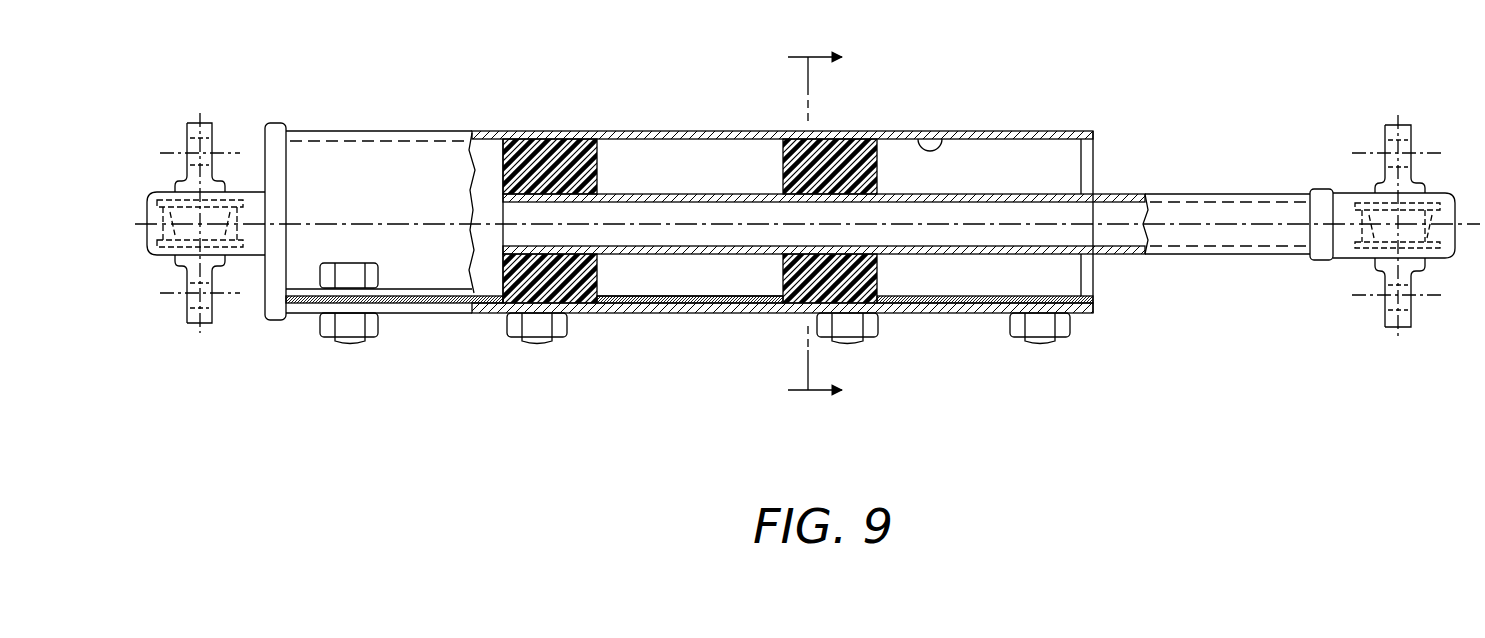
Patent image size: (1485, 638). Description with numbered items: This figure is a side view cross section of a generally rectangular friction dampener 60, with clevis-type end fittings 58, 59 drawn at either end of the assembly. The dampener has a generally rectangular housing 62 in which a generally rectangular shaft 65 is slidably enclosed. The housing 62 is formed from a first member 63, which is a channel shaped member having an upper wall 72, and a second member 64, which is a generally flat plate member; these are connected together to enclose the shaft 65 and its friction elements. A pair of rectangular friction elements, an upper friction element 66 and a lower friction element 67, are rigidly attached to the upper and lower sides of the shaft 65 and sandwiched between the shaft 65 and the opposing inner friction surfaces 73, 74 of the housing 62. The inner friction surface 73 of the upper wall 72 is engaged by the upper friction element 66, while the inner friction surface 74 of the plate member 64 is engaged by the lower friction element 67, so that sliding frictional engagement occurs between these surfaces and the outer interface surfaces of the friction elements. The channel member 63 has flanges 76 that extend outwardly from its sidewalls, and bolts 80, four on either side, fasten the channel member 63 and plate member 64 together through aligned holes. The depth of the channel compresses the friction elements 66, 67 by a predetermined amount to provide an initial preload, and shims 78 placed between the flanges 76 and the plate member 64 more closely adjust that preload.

The clevis end fitting 58 is at (148, 192).
The clevis end fitting 59 is at (1453, 210).
The friction dampener 60 is at (787, 223).
The rectangular housing 62 is at (614, 128).
The first member 63 is at (707, 130).
The second member 64 is at (668, 316).
The rectangular shaft 65 is at (962, 193).
The upper friction element 66 is at (595, 170).
The lower friction element 67 is at (594, 274).
The upper wall 72 is at (1047, 130).
The inner friction surface 73 is at (936, 147).
The inner friction surface 74 is at (698, 306).
The flanges 76 is at (298, 289).
The shims 78 is at (400, 300).
The bolts 80 is at (341, 330).